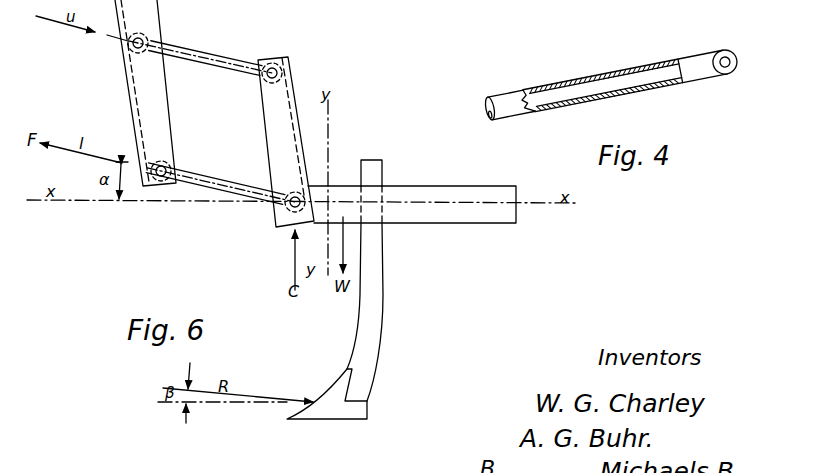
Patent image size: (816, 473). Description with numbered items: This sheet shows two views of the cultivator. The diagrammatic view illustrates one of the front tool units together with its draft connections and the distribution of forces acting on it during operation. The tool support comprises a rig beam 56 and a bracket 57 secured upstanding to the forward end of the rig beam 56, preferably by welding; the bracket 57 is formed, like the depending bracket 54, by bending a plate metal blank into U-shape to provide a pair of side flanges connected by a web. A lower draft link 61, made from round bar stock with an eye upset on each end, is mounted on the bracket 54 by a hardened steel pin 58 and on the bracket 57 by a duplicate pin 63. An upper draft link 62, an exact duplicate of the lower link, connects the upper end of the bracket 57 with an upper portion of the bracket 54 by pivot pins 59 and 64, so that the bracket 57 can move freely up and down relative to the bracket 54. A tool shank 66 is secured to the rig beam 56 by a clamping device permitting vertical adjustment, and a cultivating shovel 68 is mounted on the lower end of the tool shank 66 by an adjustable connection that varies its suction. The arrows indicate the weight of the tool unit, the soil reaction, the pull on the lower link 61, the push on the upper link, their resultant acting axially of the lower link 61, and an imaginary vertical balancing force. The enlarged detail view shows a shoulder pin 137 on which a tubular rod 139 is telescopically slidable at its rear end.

In FIG. 6, the bracket 54 is at (134, 101).
In FIG. 6, the bracket 57 is at (266, 134).
In FIG. 6, the pivot pin 59 is at (133, 47).
In FIG. 6, the pivot pin 64 is at (284, 70).
In FIG. 6, the pin 58 is at (171, 164).
In FIG. 6, the pin 63 is at (287, 207).
In FIG. 6, the upper draft link 62 is at (210, 60).
In FIG. 6, the lower draft link 61 is at (240, 175).
In FIG. 6, the rig beam 56 is at (441, 190).
In FIG. 6, the tool shank 66 is at (378, 160).
In FIG. 6, the cultivating shovel 68 is at (337, 420).
In FIG. 4, the shoulder pin 137 is at (693, 59).
In FIG. 4, the tubular rod 139 is at (510, 91).